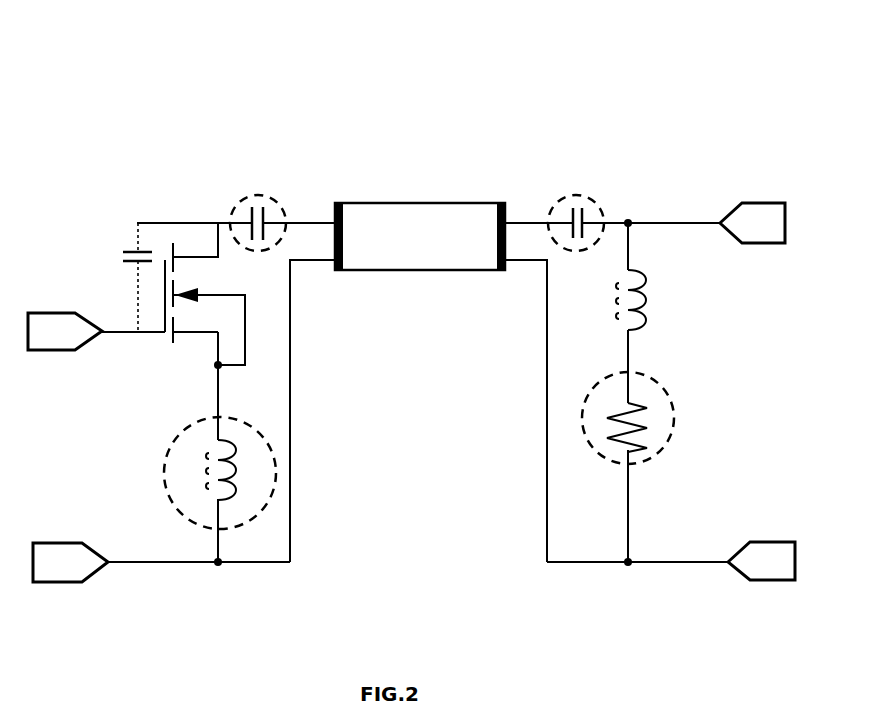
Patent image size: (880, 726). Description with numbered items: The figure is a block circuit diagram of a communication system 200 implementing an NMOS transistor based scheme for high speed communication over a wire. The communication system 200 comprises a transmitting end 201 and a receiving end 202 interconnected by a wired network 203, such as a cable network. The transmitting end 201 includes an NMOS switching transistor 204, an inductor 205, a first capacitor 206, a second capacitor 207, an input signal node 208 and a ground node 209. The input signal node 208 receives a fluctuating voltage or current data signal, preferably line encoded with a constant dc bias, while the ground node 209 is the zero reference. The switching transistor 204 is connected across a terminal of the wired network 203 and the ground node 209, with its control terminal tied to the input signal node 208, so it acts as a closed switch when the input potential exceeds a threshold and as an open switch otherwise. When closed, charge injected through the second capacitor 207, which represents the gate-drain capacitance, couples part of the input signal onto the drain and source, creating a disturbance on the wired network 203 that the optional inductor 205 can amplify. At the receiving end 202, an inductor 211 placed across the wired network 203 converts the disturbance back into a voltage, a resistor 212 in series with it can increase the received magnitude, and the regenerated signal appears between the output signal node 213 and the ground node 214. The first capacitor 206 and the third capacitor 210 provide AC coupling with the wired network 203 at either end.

The communication system 200 is at (459, 125).
The transmitting end 201 is at (163, 170).
The receiving end 202 is at (642, 186).
The wired network 203 is at (432, 272).
The NMOS switching transistor 204 is at (172, 335).
The inductor 205 is at (213, 470).
The first capacitor 206 is at (263, 197).
The second capacitor 207 is at (136, 250).
The input signal node 208 is at (55, 313).
The ground node 209 is at (75, 543).
The third capacitor 210 is at (573, 197).
The inductor 211 is at (640, 303).
The resistor 212 is at (650, 427).
The output signal node 213 is at (753, 203).
The ground node 214 is at (770, 542).